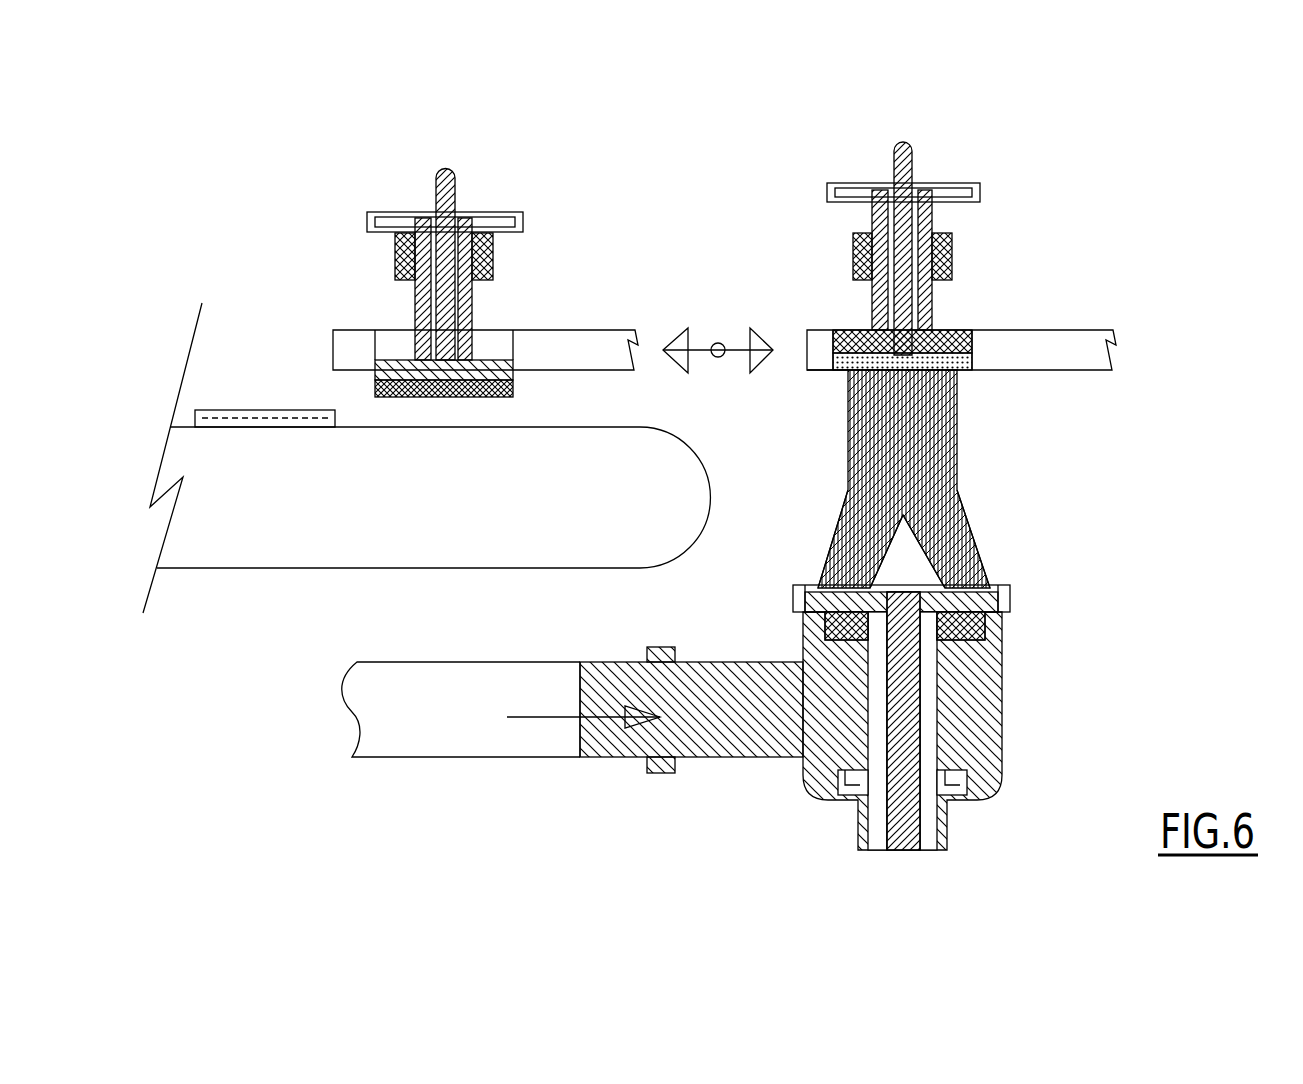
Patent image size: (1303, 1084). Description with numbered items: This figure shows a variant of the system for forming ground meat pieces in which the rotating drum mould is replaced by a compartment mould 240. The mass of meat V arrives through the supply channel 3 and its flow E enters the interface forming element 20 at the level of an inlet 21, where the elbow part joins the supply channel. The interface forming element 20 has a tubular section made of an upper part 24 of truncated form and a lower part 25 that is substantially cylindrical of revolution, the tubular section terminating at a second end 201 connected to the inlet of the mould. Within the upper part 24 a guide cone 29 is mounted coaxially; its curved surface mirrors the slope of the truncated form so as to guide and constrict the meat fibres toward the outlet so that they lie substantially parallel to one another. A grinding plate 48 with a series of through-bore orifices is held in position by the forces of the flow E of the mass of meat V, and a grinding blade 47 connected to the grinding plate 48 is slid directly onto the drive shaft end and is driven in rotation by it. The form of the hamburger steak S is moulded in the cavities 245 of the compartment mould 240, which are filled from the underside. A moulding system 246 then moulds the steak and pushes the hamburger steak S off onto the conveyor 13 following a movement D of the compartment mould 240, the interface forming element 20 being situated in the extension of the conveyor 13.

The supply channel 3 is at (490, 705).
The conveyor 13 is at (226, 570).
The interface forming element 20 is at (1003, 735).
The inlet 21 is at (730, 760).
The upper part 24 is at (835, 547).
The lower part 25 is at (957, 440).
The guide cone 29 is at (900, 553).
The grinding blade 47 is at (963, 613).
The grinding plate 48 is at (983, 592).
The second end 201 is at (840, 370).
The compartment mould 240 is at (572, 352).
The cavities 245 is at (972, 357).
The moulding system 246 is at (395, 267).
The hamburger steak S is at (278, 410).
The movement D is at (700, 345).
The flow E is at (540, 715).
The mass of meat V is at (607, 735).